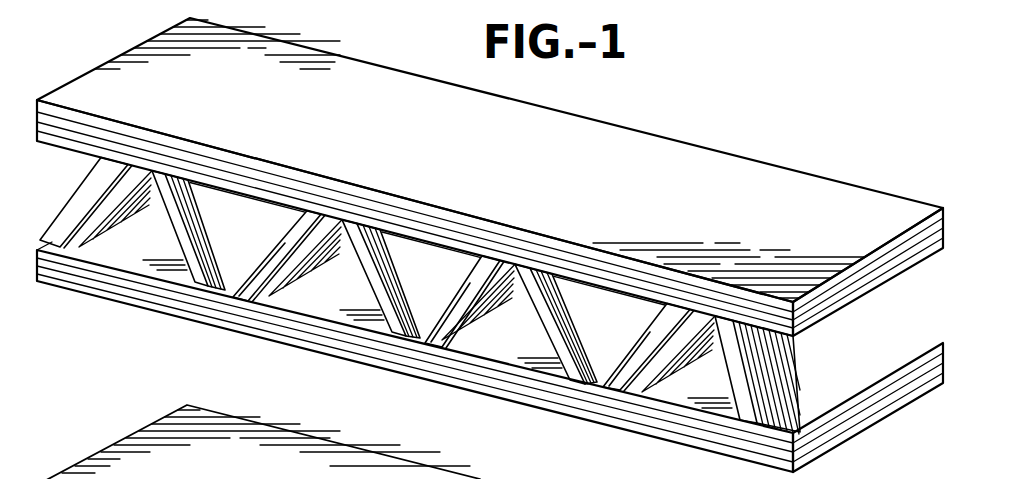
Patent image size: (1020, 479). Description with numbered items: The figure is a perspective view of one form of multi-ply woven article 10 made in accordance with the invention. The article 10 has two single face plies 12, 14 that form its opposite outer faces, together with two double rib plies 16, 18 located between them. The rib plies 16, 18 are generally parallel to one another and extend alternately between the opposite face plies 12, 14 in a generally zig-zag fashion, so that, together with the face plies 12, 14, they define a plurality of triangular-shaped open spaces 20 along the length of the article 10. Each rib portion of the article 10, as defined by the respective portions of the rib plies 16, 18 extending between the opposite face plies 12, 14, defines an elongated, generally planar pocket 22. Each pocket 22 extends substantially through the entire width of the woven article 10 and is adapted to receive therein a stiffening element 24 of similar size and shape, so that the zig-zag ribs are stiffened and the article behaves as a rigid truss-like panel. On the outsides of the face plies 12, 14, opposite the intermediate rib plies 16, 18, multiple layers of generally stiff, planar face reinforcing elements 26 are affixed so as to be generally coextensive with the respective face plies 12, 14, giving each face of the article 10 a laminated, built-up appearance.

The multi-ply woven article 10 is at (646, 444).
The face ply 12 is at (913, 258).
The face ply 14 is at (910, 368).
The rib ply 16 is at (551, 347).
The rib ply 18 is at (600, 380).
The triangular-shaped open space 20 is at (485, 347).
The pocket 22 is at (458, 328).
The stiffening element 24 is at (203, 272).
The face reinforcing element 26 is at (915, 240).